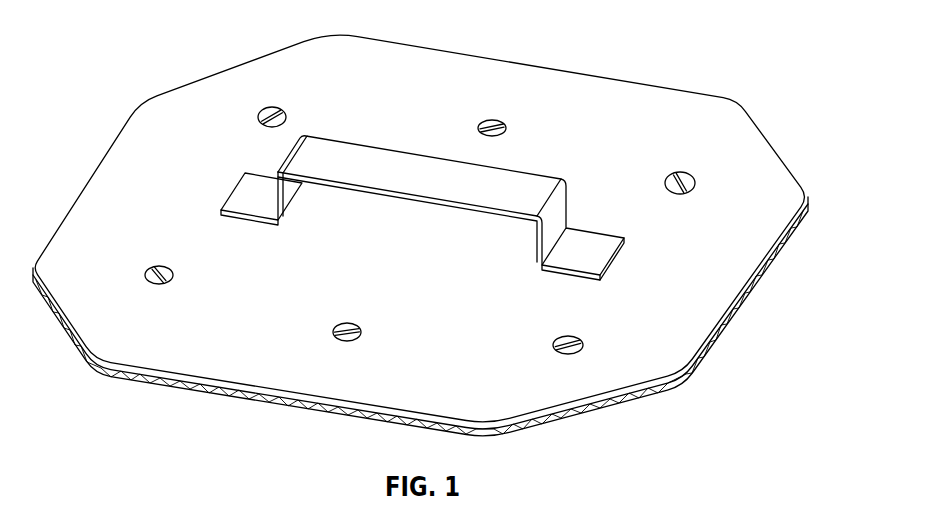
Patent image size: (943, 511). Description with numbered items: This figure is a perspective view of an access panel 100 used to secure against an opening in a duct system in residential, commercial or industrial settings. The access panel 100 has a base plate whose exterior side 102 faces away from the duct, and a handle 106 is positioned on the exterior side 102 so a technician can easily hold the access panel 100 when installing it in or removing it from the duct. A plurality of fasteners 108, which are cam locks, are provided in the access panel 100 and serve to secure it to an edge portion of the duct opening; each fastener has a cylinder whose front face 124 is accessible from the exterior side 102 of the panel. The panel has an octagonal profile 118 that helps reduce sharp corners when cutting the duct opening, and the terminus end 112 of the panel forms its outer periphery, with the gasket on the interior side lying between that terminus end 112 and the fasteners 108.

The access panel 100 is at (116, 25).
The exterior side 102 is at (452, 66).
The handle 106 is at (345, 153).
The fasteners 108 is at (683, 175).
The terminus end 112 is at (743, 311).
The octagonal profile 118 is at (163, 385).
The front face 124 is at (563, 338).